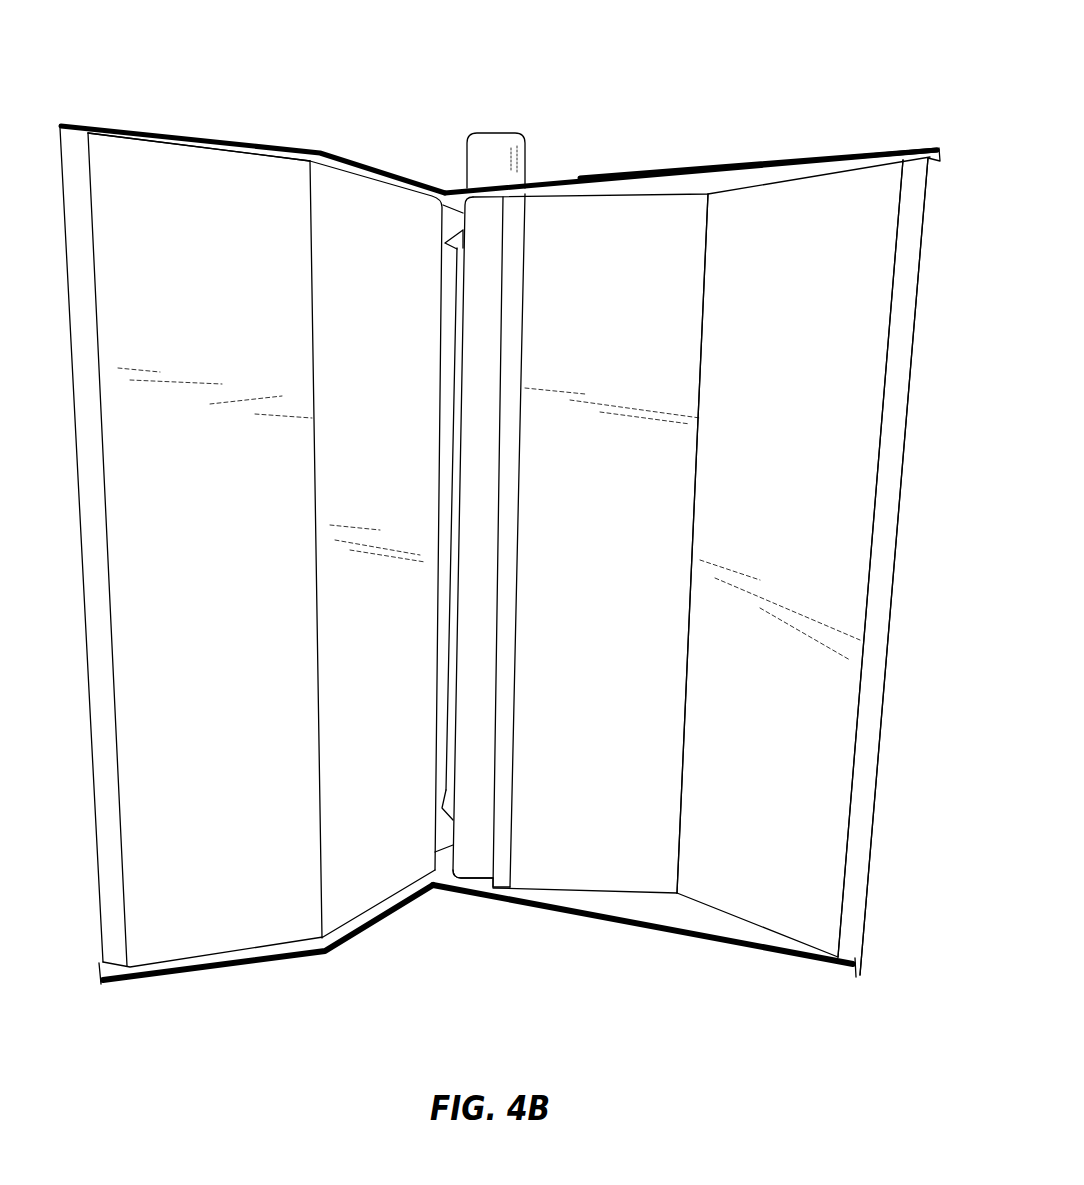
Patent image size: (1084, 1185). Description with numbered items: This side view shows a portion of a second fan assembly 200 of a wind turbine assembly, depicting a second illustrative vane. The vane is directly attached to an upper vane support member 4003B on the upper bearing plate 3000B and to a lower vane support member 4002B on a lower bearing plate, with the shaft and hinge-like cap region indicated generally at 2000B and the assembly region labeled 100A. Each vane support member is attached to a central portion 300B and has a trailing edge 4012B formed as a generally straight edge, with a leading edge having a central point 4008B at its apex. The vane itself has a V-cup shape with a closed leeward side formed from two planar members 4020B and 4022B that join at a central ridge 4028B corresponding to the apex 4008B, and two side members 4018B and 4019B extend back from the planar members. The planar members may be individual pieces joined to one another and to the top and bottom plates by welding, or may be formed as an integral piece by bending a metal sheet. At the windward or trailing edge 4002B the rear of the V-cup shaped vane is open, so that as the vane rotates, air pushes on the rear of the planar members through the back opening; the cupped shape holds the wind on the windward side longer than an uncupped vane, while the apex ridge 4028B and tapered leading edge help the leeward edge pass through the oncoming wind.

The second fan assembly 200 is at (352, 110).
The electronic device second housing 100A is at (665, 130).
The hinge cap 2000B is at (493, 152).
The upper bearing plate 3000B is at (455, 193).
The planar member 4020B is at (580, 270).
The upper vane support member 4003B is at (740, 164).
The planar member 4022B is at (815, 288).
The side member 4019B is at (908, 255).
The central point of leading edge 4008B is at (267, 950).
The central ridge 4028B is at (327, 900).
The side member 4018B is at (503, 865).
The central portion 300B is at (610, 898).
The trailing edge 4012B is at (652, 928).
The lower vane support member 4002B is at (698, 917).